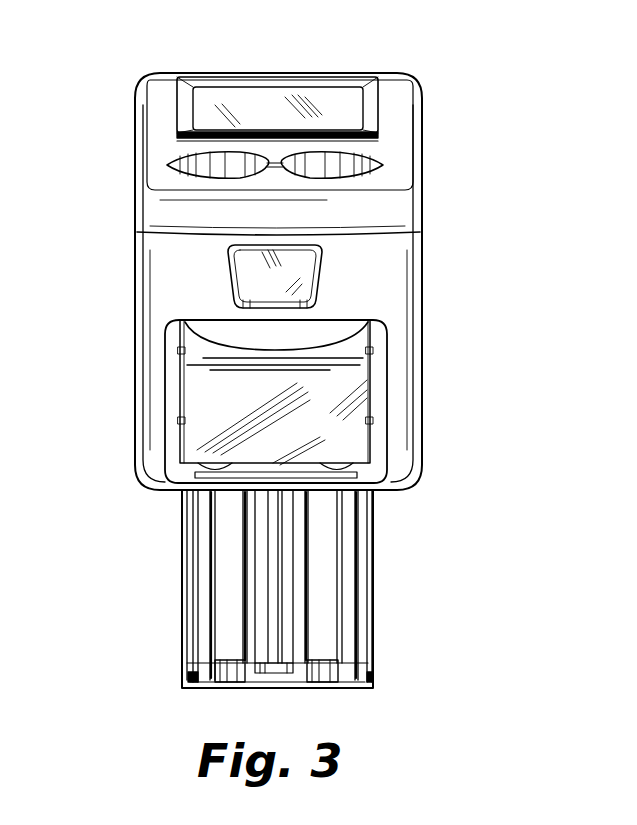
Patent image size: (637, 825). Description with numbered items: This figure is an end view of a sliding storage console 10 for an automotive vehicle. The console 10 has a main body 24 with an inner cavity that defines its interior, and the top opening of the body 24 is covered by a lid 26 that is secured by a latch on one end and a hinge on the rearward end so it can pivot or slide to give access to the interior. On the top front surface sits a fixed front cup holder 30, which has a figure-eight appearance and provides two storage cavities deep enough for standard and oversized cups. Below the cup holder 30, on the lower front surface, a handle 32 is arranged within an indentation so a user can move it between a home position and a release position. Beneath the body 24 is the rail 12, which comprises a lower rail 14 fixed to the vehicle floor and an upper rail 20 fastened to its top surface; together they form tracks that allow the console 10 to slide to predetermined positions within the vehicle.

The sliding storage console 10 is at (83, 197).
The rail 12 is at (395, 543).
The lower rail 14 is at (375, 613).
The upper rail 20 is at (230, 625).
The main body 24 is at (416, 272).
The lid 26 is at (350, 73).
The fixed front cup holder 30 is at (340, 160).
The handle 32 is at (283, 330).